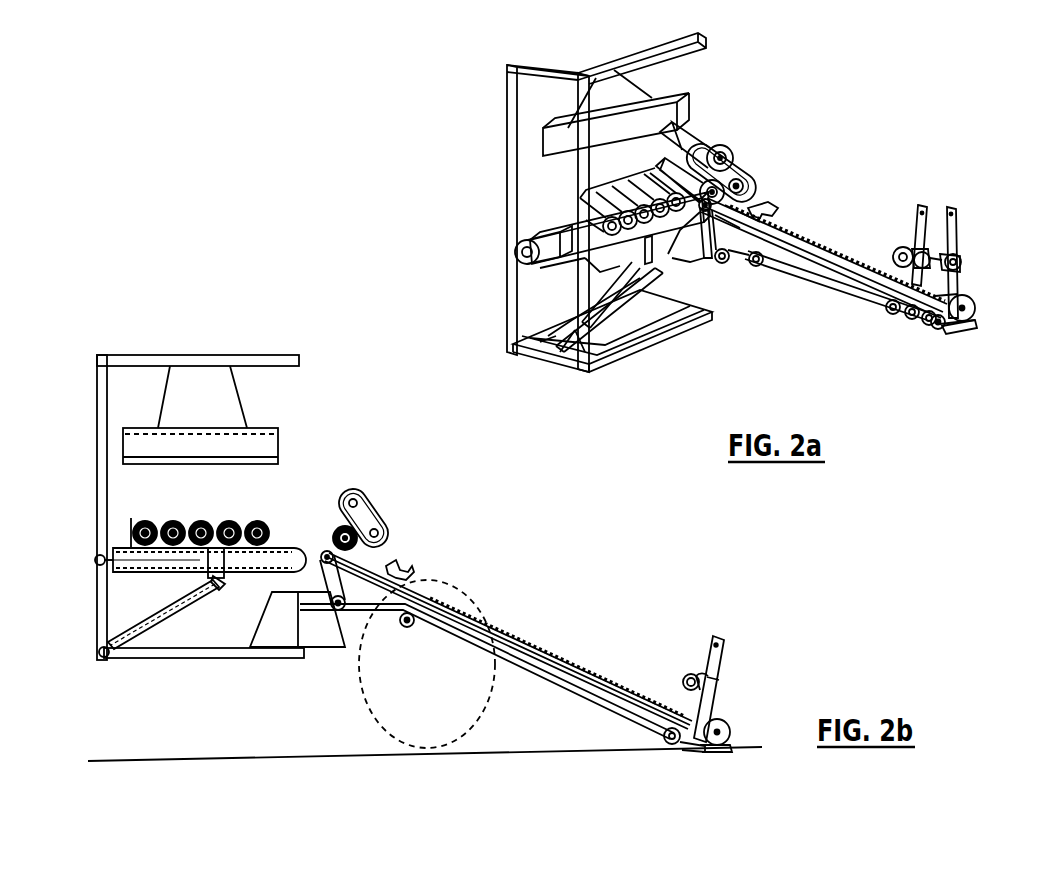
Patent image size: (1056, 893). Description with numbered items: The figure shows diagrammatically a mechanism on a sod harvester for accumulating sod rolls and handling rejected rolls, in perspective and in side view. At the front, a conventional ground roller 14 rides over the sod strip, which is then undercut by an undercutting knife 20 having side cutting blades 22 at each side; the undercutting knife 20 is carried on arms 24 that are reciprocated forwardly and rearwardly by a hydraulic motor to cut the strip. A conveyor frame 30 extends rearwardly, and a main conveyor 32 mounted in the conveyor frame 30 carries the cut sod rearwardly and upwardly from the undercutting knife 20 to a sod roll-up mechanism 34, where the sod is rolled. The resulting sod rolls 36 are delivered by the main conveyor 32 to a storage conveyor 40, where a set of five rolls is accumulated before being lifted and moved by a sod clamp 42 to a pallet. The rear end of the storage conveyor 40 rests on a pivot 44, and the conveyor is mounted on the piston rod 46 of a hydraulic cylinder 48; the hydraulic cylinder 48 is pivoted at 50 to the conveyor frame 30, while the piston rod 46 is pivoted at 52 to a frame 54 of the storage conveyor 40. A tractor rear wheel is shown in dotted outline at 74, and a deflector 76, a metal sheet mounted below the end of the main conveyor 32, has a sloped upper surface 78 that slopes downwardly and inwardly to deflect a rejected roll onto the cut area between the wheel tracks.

In FIG. 2A, the ground roller 14 is at (985, 292).
In FIG. 2B, the ground roller 14 is at (733, 722).
In FIG. 2A, the undercutting knife 20 is at (940, 332).
In FIG. 2B, the undercutting knife 20 is at (688, 752).
In FIG. 2A, the side cutting blades 22 is at (965, 330).
In FIG. 2B, the side cutting blades 22 is at (714, 752).
In FIG. 2A, the arms 24 is at (918, 222).
In FIG. 2B, the arms 24 is at (713, 660).
In FIG. 2B, the conveyor frame 30 is at (206, 658).
In FIG. 2A, the main conveyor 32 is at (832, 268).
In FIG. 2B, the main conveyor 32 is at (541, 648).
In FIG. 2A, the sod roll-up mechanism 34 is at (736, 158).
In FIG. 2B, the sod roll-up mechanism 34 is at (383, 512).
In FIG. 2A, the sod rolls 36 is at (669, 182).
In FIG. 2B, the sod rolls 36 is at (340, 525).
In FIG. 2A, the storage conveyor 40 is at (531, 246).
In FIG. 2B, the storage conveyor 40 is at (282, 546).
In FIG. 2A, the sod clamp 42 is at (682, 113).
In FIG. 2B, the sod clamp 42 is at (278, 446).
In FIG. 2B, the pivot 44 is at (113, 540).
In FIG. 2B, the piston rod 46 is at (218, 590).
In FIG. 2B, the hydraulic cylinder 48 is at (172, 604).
In FIG. 2B, the cylinder pivot 50 is at (108, 660).
In FIG. 2B, the piston rod pivot 52 is at (224, 580).
In FIG. 2A, the storage conveyor frame 54 is at (698, 275).
In FIG. 2B, the storage conveyor frame 54 is at (172, 562).
In FIG. 2B, the tractor rear wheel 74 is at (498, 714).
In FIG. 2A, the deflector 76 is at (632, 303).
In FIG. 2B, the deflector 76 is at (312, 645).
In FIG. 2A, the sloped upper surface 78 is at (650, 285).